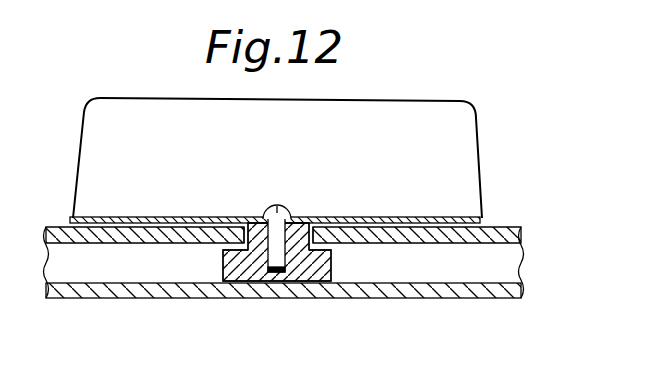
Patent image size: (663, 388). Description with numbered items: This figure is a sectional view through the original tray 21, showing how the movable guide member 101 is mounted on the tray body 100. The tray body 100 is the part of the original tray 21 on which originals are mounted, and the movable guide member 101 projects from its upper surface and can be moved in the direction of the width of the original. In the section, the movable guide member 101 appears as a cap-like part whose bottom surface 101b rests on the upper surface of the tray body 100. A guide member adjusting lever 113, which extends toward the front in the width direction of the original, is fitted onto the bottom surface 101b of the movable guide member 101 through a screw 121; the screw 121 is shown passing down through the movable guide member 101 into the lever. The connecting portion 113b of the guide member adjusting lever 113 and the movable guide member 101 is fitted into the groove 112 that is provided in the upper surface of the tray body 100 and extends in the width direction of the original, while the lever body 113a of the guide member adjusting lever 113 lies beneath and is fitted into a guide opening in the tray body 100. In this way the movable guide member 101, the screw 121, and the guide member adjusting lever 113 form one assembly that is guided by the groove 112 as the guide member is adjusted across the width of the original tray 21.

The movable guide member 101 is at (478, 134).
The bottom surface of the movable guide member 101b is at (467, 221).
The tray body 100 is at (507, 227).
The groove 112 is at (313, 221).
The guide member adjusting lever 113 is at (250, 266).
The lever body 113a is at (331, 268).
The connecting portion 113b is at (243, 221).
The screw 121 is at (268, 207).
The original tray 21 is at (524, 270).